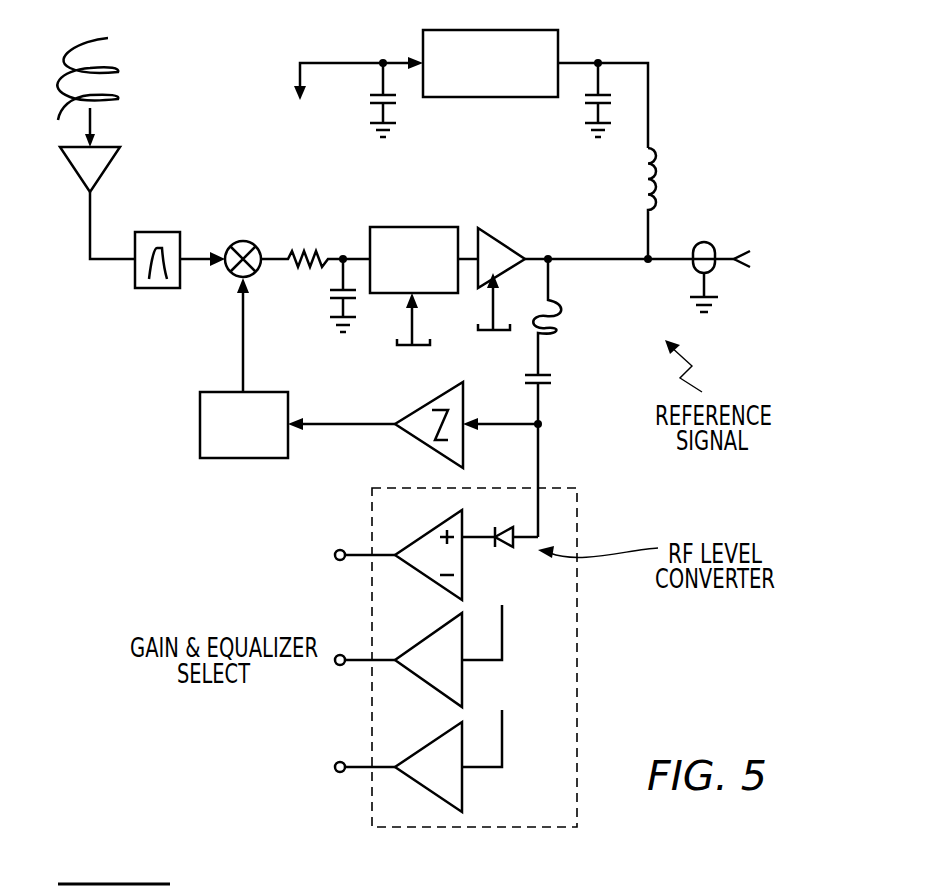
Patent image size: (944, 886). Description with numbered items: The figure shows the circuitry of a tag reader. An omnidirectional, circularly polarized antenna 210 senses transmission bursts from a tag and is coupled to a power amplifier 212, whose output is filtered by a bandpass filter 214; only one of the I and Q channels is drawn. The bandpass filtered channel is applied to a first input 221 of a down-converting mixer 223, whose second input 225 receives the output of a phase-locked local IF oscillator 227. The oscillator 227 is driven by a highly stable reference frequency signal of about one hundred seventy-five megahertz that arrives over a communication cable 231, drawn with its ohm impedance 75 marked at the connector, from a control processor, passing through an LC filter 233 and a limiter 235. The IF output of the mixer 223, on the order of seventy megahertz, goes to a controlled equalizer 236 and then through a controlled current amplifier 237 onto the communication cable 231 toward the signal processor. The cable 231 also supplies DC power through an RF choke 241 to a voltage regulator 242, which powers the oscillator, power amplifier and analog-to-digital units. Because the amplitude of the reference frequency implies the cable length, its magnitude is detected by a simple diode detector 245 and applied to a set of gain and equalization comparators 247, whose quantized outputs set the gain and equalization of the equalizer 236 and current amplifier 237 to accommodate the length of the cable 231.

The antenna 210 is at (118, 67).
The power amplifier 212 is at (72, 172).
The bandpass filter 214 is at (155, 289).
The first input 221 is at (229, 248).
The down-converting mixer 223 is at (237, 242).
The second input 225 is at (233, 276).
The phase-locked local IF oscillator 227 is at (200, 428).
The communication cable 231 is at (594, 257).
The LC filter 233 is at (558, 306).
The limiter 235 is at (415, 411).
The controlled equalizer 236 is at (420, 227).
The controlled current amplifier 237 is at (500, 243).
The RF choke 241 is at (645, 171).
The voltage regulator 242 is at (535, 30).
The diode detector 245 is at (501, 527).
The gain and equalization comparators 247 is at (517, 738).
The 75 ohm connector 75 is at (816, 268).